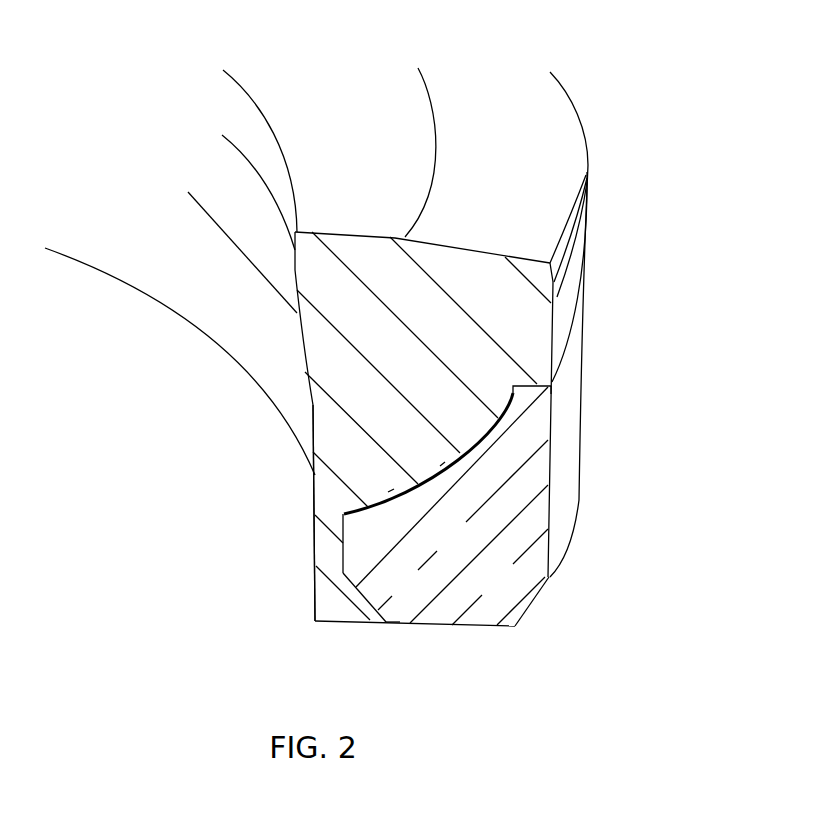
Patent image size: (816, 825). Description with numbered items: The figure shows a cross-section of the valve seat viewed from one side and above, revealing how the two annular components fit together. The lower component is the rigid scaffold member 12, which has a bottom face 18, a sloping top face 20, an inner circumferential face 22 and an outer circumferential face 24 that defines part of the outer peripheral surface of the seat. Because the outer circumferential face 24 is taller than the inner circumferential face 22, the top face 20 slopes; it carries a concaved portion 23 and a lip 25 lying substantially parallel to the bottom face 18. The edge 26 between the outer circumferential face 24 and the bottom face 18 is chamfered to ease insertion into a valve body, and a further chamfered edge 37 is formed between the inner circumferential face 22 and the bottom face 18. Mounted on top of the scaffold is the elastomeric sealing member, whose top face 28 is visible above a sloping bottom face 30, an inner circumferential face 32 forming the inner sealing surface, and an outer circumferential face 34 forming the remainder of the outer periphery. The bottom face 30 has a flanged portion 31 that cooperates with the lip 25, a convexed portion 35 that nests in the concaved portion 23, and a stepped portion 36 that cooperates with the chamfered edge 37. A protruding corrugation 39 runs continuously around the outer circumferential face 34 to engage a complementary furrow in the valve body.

The rigid scaffold member 12 is at (463, 532).
The bottom face 18 is at (451, 627).
The top face 20 is at (485, 442).
The inner circumferential face 22 is at (346, 556).
The concaved portion 23 is at (446, 488).
The outer circumferential face 24 is at (558, 481).
The lip 25 is at (529, 389).
The edge 26 is at (540, 610).
The top face 28 is at (482, 100).
The bottom face 30 is at (389, 493).
The flanged portion 31 is at (527, 383).
The inner circumferential face 32 is at (313, 556).
The outer circumferential face 34 is at (564, 313).
The convexed portion 35 is at (438, 463).
The stepped portion 36 is at (357, 590).
The chamfered edge 37 is at (385, 610).
The protruding corrugation 39 is at (583, 246).